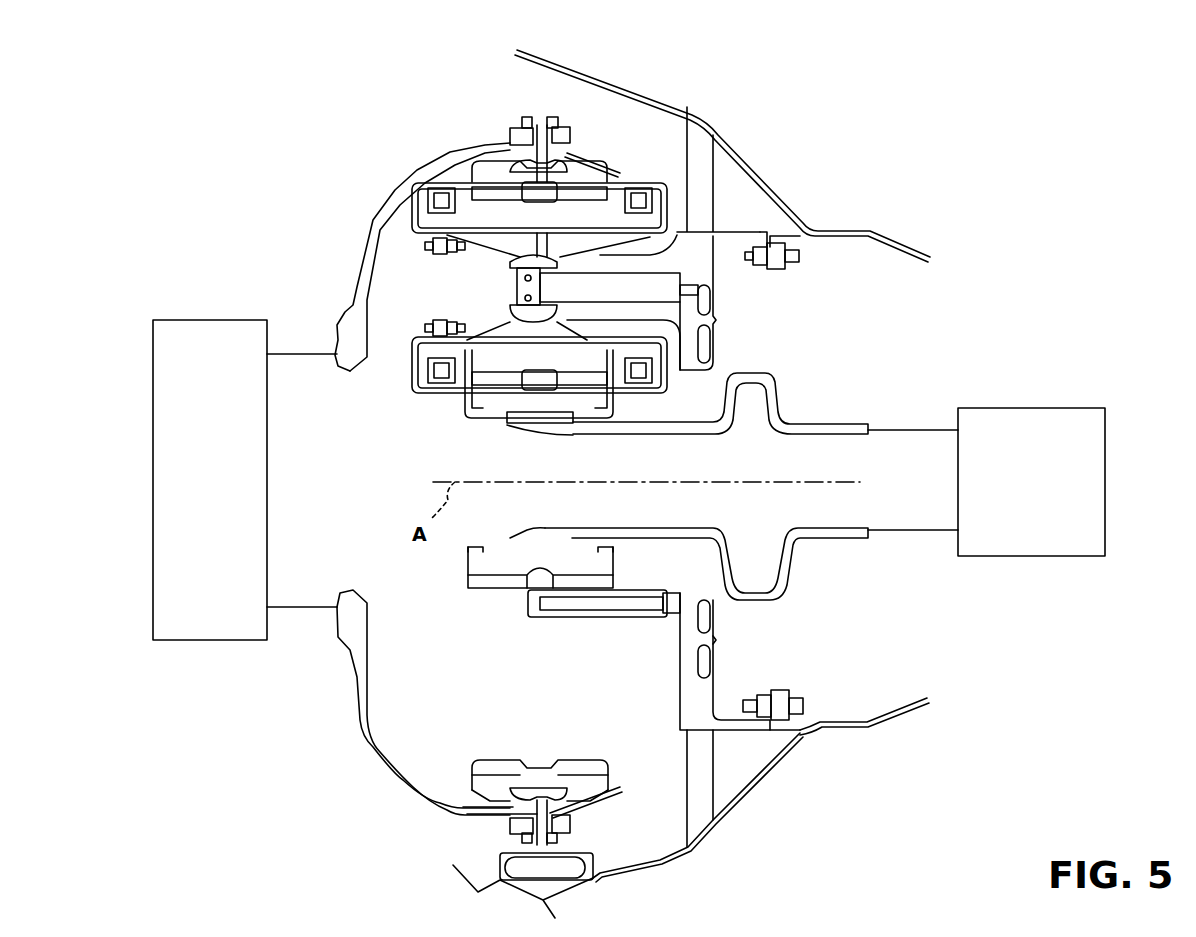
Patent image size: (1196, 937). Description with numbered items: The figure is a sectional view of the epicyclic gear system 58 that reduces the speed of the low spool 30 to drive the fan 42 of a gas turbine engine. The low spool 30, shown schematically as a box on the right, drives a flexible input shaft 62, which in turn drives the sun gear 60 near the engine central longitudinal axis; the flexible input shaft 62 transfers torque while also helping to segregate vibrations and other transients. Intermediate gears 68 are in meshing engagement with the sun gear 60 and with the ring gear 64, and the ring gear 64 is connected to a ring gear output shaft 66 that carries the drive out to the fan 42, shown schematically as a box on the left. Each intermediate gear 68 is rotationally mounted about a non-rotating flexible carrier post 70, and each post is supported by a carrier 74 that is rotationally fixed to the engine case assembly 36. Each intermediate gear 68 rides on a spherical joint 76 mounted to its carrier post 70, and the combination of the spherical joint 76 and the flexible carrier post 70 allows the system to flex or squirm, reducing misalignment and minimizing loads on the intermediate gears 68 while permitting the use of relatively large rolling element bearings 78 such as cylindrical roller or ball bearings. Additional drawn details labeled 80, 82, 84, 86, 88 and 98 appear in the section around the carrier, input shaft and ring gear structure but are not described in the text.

The low spool 30 is at (1044, 486).
The engine case assembly 36 is at (868, 237).
The fan 42 is at (220, 500).
The epicyclic gear system 58 is at (935, 126).
The sun gear 60 is at (487, 575).
The flexible input shaft 62 is at (822, 430).
The ring gear 64 is at (578, 170).
The ring gear output shaft 66 is at (380, 193).
The intermediate gear 68 is at (492, 360).
The non-rotating flexible carrier post 70 is at (693, 256).
The carrier 74 is at (622, 265).
The spherical joint 76 is at (512, 285).
The rolling element bearing 78 is at (444, 194).
The slot 80 is at (713, 322).
The slot 82 is at (708, 300).
The bracket 84 is at (705, 620).
The rod 86 is at (597, 618).
The housing 88 is at (415, 394).
The bracket 98 is at (565, 870).